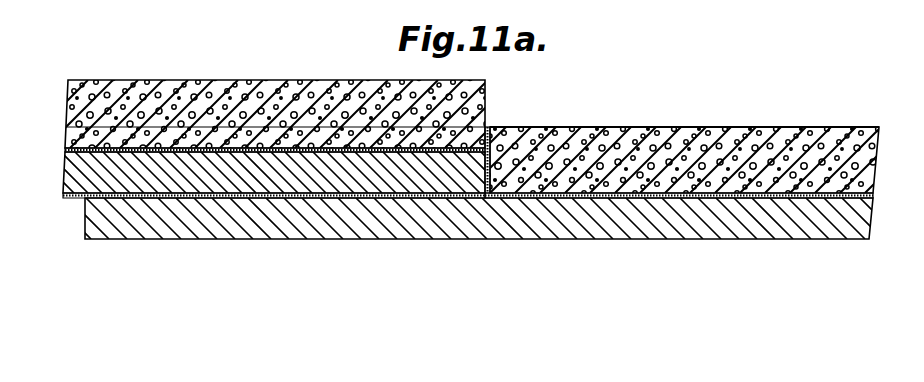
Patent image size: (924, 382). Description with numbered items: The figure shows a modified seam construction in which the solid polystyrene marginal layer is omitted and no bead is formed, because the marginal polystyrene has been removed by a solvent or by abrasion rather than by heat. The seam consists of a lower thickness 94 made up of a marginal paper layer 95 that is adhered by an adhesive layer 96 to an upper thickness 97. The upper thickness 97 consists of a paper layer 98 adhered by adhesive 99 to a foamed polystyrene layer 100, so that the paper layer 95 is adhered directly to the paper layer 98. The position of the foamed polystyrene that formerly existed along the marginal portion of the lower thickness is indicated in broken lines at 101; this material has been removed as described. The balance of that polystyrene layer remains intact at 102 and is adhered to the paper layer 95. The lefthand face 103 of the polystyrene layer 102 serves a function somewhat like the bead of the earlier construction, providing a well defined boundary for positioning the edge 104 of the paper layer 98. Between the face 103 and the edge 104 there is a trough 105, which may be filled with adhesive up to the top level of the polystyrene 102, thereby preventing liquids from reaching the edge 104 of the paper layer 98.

The thickness 94 is at (57, 195).
The marginal paper layer 95 is at (117, 221).
The adhesive layer 96 is at (167, 194).
The thickness 97 is at (57, 80).
The paper layer 98 is at (222, 180).
The adhesive 99 is at (285, 154).
The foamed polystyrene layer 100 is at (269, 94).
The removed foamed polystyrene 101 is at (295, 122).
The polystyrene layer 102 is at (669, 140).
The lefthand face 103 is at (516, 127).
The edge 104 is at (478, 186).
The trough 105 is at (488, 127).